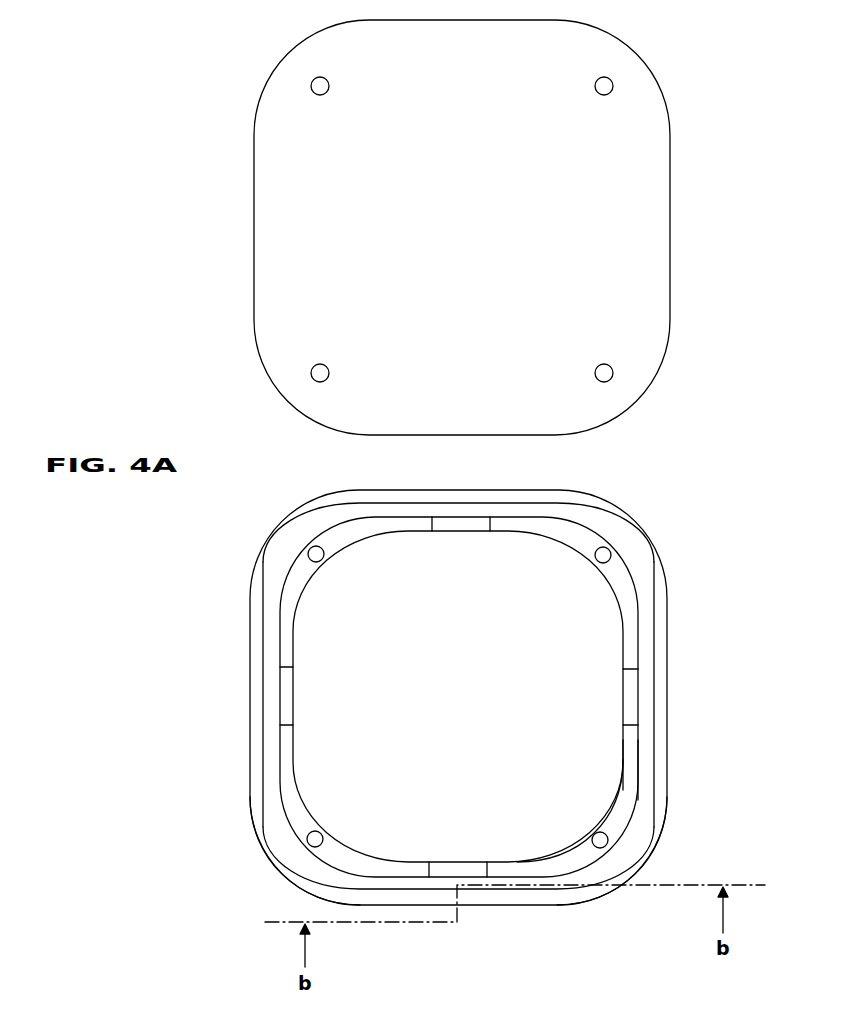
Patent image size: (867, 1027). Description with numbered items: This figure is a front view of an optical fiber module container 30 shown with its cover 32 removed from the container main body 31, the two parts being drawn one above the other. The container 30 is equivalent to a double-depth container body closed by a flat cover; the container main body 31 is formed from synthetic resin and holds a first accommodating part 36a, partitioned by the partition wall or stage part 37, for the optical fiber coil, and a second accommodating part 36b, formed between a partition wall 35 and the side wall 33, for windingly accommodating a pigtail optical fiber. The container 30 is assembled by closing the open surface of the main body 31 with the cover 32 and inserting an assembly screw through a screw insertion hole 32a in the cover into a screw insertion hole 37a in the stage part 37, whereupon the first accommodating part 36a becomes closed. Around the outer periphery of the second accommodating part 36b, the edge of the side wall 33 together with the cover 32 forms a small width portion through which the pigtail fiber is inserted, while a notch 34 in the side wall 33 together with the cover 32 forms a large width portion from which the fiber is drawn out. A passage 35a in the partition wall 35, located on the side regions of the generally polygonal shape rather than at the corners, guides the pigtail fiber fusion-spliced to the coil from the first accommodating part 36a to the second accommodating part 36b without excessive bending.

The container 30 is at (712, 465).
The container main body 31 is at (668, 572).
The cover 32 is at (671, 222).
The screw insertion hole 32a is at (603, 364).
The side wall 33 is at (668, 700).
The notch 34 is at (297, 862).
The partition wall 35 is at (628, 745).
The passage 35a is at (460, 523).
The first accommodating part 36a is at (595, 788).
The second accommodating part 36b is at (645, 773).
The stage part 37 is at (565, 860).
The screw insertion hole 37a is at (593, 833).